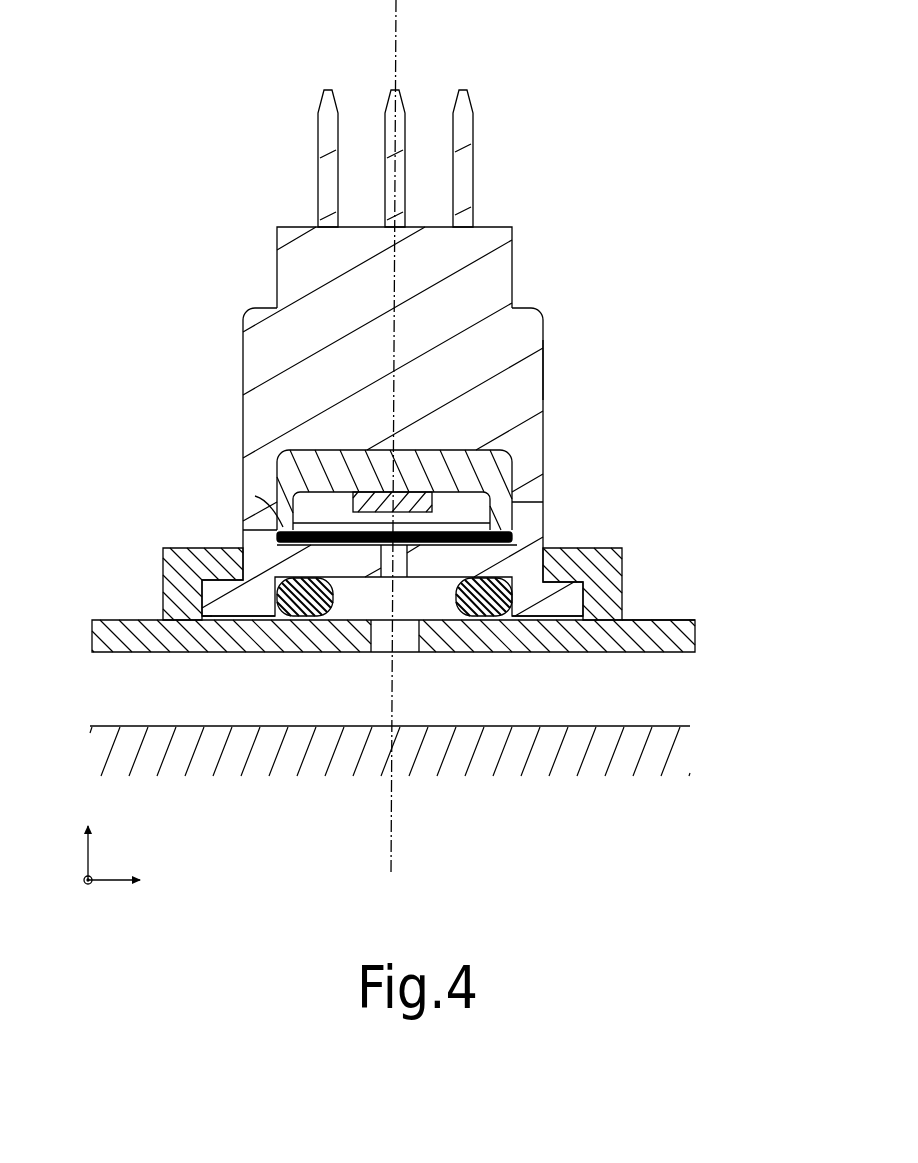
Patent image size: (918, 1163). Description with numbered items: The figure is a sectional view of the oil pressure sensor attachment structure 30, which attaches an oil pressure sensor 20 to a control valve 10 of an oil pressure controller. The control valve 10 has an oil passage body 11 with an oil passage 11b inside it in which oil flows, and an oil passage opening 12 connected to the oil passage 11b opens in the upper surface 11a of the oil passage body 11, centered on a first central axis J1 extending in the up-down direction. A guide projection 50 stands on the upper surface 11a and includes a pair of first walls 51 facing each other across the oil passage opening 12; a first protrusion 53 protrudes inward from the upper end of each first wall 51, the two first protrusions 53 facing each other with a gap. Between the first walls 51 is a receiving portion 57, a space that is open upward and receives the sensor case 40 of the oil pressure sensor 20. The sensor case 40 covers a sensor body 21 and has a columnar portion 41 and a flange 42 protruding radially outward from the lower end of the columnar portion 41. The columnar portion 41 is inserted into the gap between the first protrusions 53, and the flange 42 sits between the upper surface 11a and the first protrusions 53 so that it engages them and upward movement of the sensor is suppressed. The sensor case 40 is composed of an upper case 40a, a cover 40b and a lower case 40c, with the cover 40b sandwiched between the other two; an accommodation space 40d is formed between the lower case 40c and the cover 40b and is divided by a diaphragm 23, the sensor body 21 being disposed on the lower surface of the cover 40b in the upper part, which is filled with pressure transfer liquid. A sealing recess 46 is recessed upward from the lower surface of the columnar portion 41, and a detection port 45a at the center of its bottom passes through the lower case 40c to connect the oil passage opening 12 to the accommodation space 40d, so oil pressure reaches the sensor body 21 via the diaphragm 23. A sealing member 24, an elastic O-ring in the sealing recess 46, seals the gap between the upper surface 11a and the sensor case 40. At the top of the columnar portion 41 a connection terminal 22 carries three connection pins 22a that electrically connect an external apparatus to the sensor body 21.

The first central axis J1 is at (398, 40).
The oil pressure sensor attachment structure 30 is at (616, 147).
The connection terminal 22 is at (520, 216).
The connection pins 22a is at (470, 110).
The oil pressure sensor 20 is at (542, 300).
The sensor case 40 is at (398, 474).
The columnar portion 41 is at (238, 365).
The flange 42 is at (585, 605).
The upper case 40a is at (534, 366).
The cover 40b is at (487, 470).
The lower case 40c is at (257, 593).
The accommodation space 40d is at (525, 600).
The sensor body 21 is at (465, 515).
The diaphragm 23 is at (265, 497).
The detection port 45a is at (400, 565).
The sealing recess 46 is at (300, 600).
The sealing member 24 is at (485, 605).
The control valve 10 is at (160, 550).
The oil passage body 11 is at (637, 653).
The upper surface 11a is at (633, 622).
The oil passage 11b is at (535, 708).
The oil passage opening 12 is at (375, 640).
The guide projection 50 is at (627, 565).
The first walls 51 is at (165, 600).
The first protrusions 53 is at (217, 563).
The receiving portion 57 is at (212, 605).